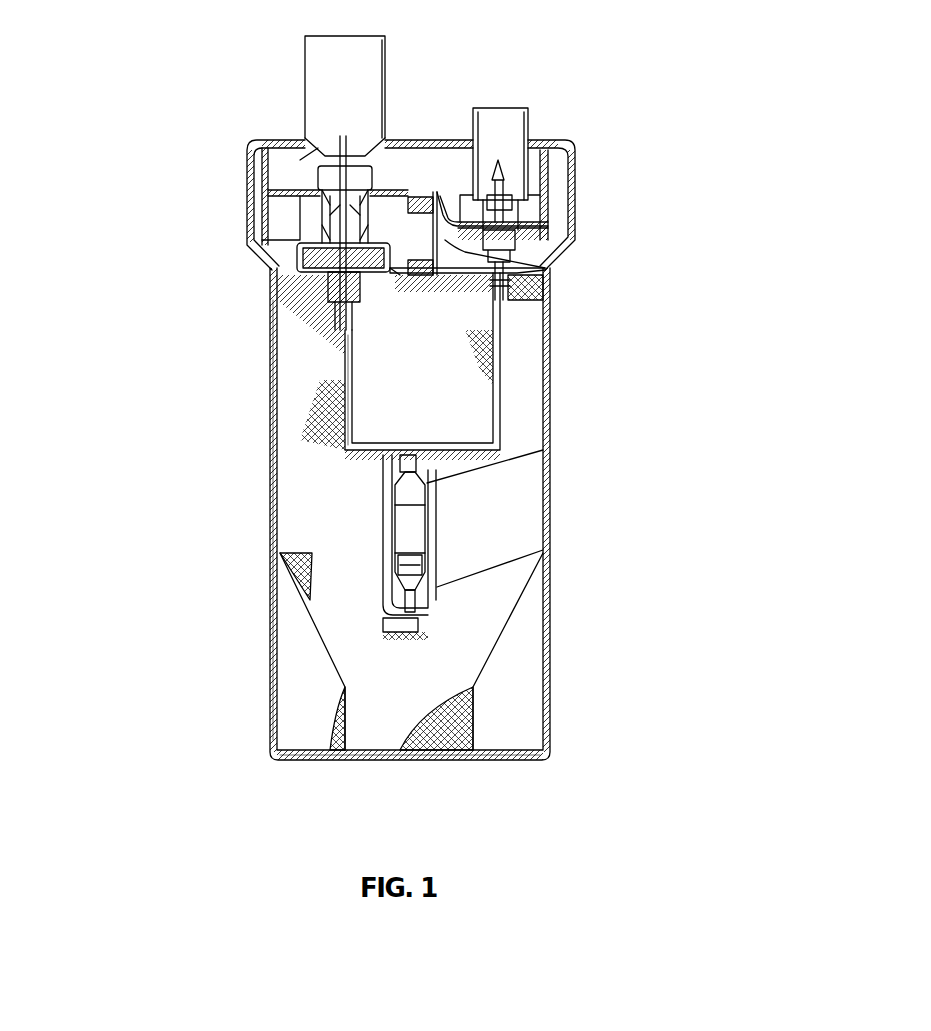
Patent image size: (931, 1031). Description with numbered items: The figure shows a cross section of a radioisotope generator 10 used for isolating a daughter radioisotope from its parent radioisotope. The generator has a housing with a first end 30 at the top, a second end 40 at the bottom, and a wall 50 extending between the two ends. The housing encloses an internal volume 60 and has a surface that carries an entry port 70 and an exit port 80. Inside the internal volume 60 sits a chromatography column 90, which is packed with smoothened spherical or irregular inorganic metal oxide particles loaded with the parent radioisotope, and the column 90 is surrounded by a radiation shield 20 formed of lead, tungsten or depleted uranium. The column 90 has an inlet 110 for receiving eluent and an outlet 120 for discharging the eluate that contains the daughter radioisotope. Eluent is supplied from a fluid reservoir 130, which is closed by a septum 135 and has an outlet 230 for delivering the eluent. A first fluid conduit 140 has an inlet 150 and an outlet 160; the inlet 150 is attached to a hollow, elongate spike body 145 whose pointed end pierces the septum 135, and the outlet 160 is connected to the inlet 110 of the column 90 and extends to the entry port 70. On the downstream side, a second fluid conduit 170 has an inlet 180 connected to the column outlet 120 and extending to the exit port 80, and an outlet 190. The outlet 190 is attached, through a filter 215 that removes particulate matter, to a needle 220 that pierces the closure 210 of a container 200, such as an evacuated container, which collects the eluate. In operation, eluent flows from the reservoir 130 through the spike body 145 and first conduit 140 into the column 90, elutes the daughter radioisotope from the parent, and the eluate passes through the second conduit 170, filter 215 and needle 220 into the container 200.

The radioisotope generator 10 is at (150, 243).
The radiation shield 20 is at (527, 414).
The first end 30 is at (420, 187).
The second end 40 is at (482, 753).
The wall 50 is at (270, 593).
The internal volume 60 is at (420, 620).
The entry port 70 is at (515, 273).
The exit port 80 is at (327, 297).
The chromatography column 90 is at (418, 535).
The inlet 110 is at (392, 475).
The outlet 120 is at (410, 597).
The fluid reservoir 130 is at (507, 143).
The septum 135 is at (520, 208).
The first fluid conduit 140 is at (552, 377).
The spike body 145 is at (503, 192).
The inlet 150 is at (547, 297).
The outlet 160 is at (410, 458).
The second fluid conduit 170 is at (345, 383).
The inlet 180 is at (410, 608).
The outlet 190 is at (345, 331).
The container 200 is at (328, 68).
The closure 210 is at (335, 185).
The filter 215 is at (325, 266).
The needle 220 is at (343, 145).
The outlet 230 is at (500, 290).